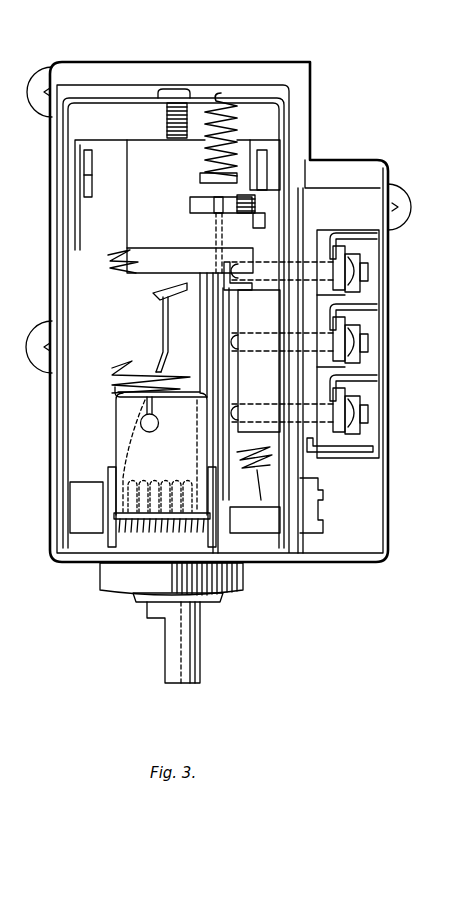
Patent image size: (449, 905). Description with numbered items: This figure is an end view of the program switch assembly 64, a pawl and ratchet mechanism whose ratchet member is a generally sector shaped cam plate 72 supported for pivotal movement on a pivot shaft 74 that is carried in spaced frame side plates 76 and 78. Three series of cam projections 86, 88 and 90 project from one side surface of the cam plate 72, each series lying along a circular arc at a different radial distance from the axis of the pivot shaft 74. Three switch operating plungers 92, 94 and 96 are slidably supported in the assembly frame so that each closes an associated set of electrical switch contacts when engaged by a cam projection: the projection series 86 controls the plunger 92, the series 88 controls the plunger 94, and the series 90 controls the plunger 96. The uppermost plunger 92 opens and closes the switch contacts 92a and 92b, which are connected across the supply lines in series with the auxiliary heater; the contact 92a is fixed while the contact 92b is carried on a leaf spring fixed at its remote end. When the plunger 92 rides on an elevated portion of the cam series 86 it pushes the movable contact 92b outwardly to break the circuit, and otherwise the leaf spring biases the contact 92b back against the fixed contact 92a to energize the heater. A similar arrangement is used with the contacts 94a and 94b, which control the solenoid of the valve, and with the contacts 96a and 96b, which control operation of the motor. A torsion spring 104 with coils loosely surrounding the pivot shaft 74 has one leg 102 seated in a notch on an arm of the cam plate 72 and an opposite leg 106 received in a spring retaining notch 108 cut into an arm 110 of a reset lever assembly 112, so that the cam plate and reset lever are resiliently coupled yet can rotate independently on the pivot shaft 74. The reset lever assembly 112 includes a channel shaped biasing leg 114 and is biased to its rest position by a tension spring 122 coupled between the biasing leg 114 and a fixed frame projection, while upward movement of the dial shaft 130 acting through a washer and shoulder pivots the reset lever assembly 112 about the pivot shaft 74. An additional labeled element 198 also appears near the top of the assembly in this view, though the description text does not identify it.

The program switch assembly 64 is at (75, 585).
The cam plate 72 is at (208, 248).
The pivot shaft 74 is at (98, 500).
The frame side plate 76 is at (69, 329).
The frame side plate 78 is at (285, 462).
The cam projection series 86 is at (230, 262).
The cam projection series 88 is at (230, 323).
The cam projection series 90 is at (232, 398).
The switch operating plunger 92 is at (305, 343).
The fixed contact 92a is at (332, 250).
The movable contact 92b is at (362, 256).
The switch operating plunger 94 is at (282, 328).
The fixed contact 94a is at (345, 314).
The movable contact 94b is at (362, 328).
The switch operating plunger 96 is at (282, 395).
The fixed contact 96a is at (347, 384).
The movable contact 96b is at (363, 430).
The torsion spring leg 102 is at (200, 343).
The torsion spring 104 is at (148, 540).
The torsion spring leg 106 is at (162, 340).
The spring retaining notch 108 is at (160, 300).
The arm 110 is at (153, 285).
The reset lever assembly 112 is at (110, 414).
The biasing leg 114 is at (172, 453).
The tension spring 122 is at (108, 271).
The dial shaft 130 is at (200, 638).
The adjusting screw 198 is at (167, 120).